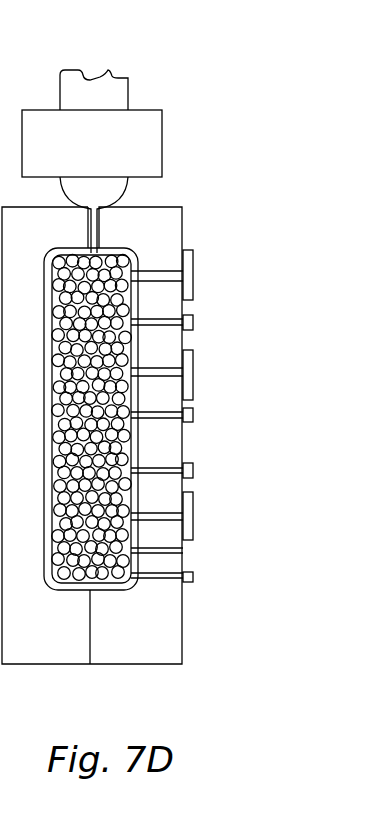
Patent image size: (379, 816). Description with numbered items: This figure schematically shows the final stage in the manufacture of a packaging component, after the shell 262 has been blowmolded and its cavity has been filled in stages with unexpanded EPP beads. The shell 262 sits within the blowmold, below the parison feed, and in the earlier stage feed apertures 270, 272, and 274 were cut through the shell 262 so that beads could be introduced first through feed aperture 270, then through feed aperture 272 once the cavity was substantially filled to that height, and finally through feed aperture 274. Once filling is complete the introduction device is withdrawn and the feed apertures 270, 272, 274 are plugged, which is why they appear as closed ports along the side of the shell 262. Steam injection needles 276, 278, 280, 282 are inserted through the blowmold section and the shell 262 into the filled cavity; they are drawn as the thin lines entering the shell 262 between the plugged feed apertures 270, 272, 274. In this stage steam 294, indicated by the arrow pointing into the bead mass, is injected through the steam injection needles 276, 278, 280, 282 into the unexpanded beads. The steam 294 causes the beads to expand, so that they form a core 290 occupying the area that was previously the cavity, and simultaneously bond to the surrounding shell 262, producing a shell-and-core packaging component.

The shell 262 is at (128, 256).
The feed aperture 270 is at (193, 516).
The feed aperture 272 is at (193, 372).
The feed aperture 274 is at (183, 273).
The steam injection needle 276 is at (193, 573).
The steam injection needle 278 is at (193, 473).
The steam injection needle 280 is at (193, 415).
The steam injection needle 282 is at (193, 321).
The core 290 is at (183, 548).
The steam 294 is at (113, 576).